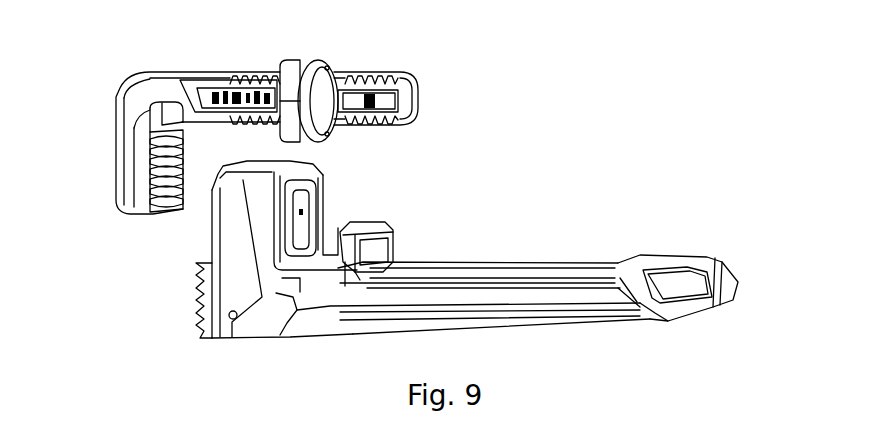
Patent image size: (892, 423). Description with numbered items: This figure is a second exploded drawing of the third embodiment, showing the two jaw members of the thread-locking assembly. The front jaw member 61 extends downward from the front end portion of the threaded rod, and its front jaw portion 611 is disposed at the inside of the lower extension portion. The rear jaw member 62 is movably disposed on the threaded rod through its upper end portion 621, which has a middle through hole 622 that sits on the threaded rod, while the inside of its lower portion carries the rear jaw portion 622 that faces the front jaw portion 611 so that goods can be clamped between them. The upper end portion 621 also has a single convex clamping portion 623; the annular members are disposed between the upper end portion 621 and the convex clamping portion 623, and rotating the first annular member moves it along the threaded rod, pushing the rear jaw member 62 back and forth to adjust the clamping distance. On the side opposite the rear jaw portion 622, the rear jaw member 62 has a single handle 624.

The front jaw member 61 is at (267, 159).
The front jaw portion 611 is at (153, 218).
The rear jaw member 62 is at (450, 268).
The upper end portion 621 is at (280, 207).
The rear jaw portion 622 is at (210, 300).
The convex clamping portion 623 is at (343, 240).
The handle 624 is at (473, 293).